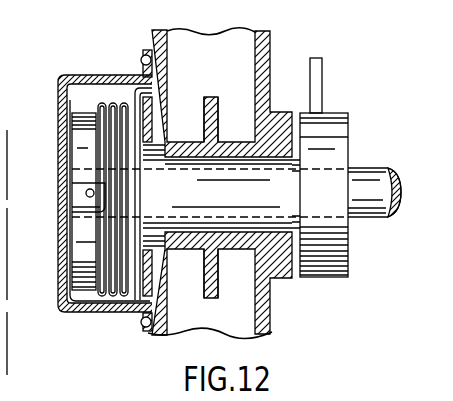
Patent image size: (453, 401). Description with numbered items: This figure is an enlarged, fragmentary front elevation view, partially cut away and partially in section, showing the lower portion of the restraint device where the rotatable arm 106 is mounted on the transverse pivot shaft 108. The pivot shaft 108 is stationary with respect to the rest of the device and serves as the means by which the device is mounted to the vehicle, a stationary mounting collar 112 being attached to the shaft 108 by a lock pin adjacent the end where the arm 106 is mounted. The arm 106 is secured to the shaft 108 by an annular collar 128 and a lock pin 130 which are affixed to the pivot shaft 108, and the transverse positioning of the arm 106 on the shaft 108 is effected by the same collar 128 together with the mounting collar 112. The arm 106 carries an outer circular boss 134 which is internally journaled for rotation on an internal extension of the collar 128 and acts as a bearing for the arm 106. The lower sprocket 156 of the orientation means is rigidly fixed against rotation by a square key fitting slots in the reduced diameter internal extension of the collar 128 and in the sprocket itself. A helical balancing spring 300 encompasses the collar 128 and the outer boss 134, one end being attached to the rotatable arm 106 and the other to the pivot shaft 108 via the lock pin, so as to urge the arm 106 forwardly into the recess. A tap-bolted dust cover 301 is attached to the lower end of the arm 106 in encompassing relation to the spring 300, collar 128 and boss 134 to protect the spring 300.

The rotatable arm 106 is at (143, 38).
The pivot shaft 108 is at (372, 185).
The mounting collar 112 is at (333, 116).
The annular collar 128 is at (90, 245).
The lock pin 130 is at (86, 192).
The outer circular boss 134 is at (143, 256).
The lower sprocket 156 is at (212, 97).
The helical balancing spring 300 is at (92, 107).
The dust cover 301 is at (93, 75).